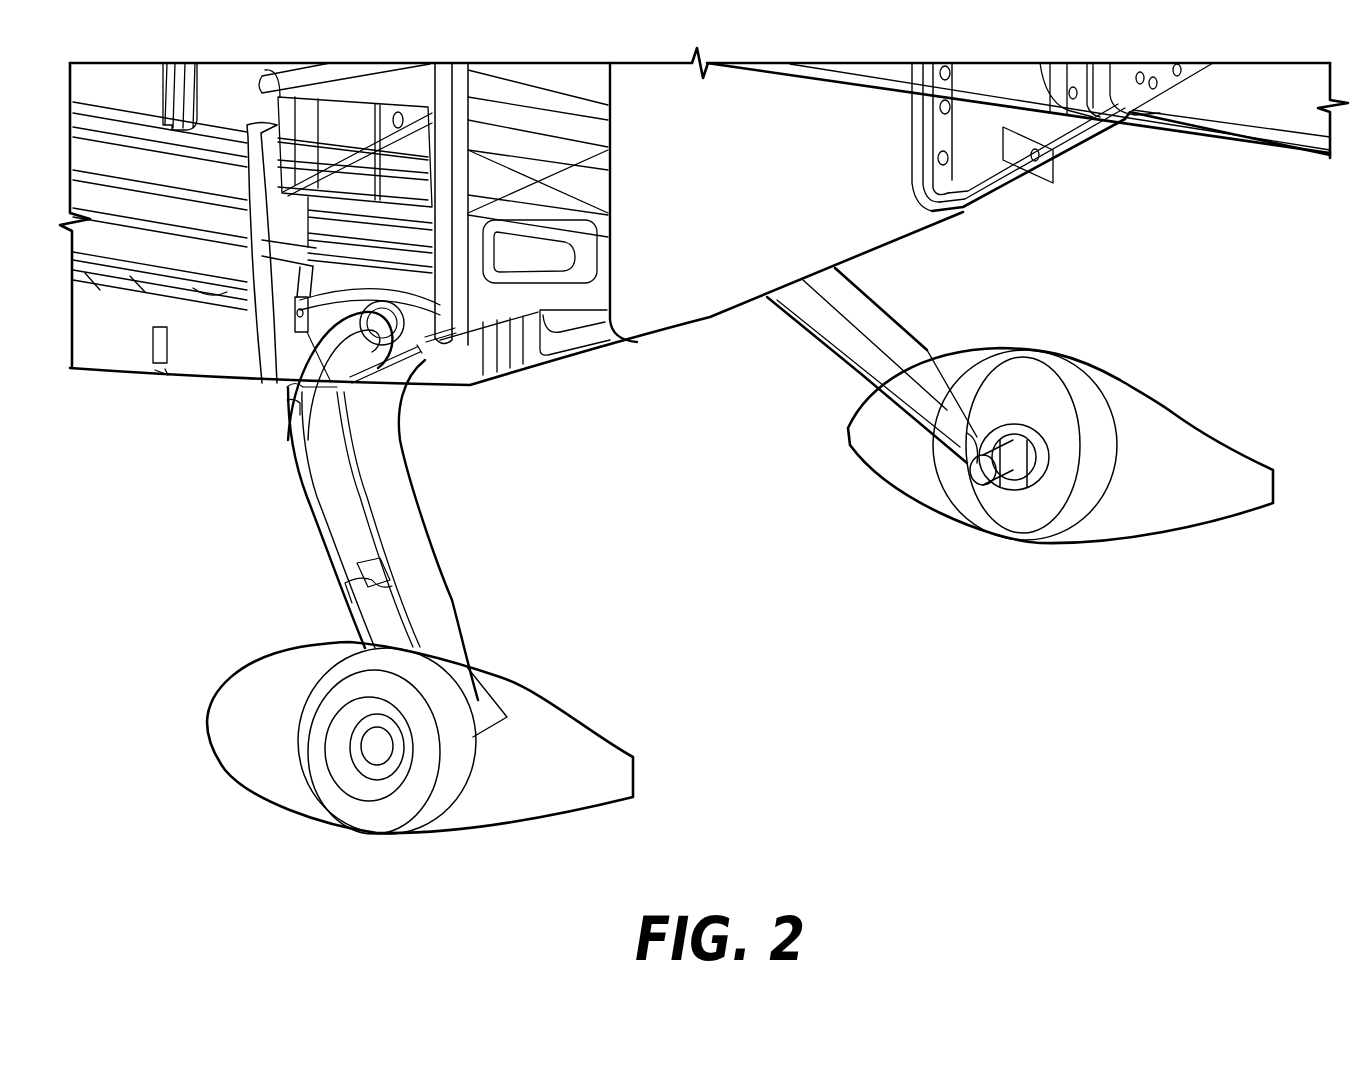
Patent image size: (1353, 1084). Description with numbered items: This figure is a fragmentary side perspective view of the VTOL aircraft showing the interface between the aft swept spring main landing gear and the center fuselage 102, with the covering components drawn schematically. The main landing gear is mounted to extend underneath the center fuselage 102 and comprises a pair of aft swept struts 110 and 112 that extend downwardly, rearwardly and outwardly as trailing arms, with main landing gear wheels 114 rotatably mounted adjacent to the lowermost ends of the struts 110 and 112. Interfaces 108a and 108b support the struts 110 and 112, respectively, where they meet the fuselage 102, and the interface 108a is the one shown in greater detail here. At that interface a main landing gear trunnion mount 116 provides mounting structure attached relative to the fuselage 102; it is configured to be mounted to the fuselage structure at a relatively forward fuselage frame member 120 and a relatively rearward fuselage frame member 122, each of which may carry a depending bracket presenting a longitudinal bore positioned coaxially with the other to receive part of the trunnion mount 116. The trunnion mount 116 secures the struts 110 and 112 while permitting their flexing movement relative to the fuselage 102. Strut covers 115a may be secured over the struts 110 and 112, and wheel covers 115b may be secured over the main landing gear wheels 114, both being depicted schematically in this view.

The center fuselage 102 is at (117, 392).
The interface 108a is at (268, 420).
The interface 108b is at (980, 217).
The main landing gear strut 110 is at (388, 517).
The main landing gear strut 112 is at (918, 327).
The main landing gear wheel 114 is at (377, 855).
The strut cover 115a is at (803, 330).
The wheel cover 115b is at (570, 725).
The main landing gear trunnion mount 116 is at (400, 345).
The forward fuselage frame member 120 is at (296, 315).
The aft fuselage frame member 122 is at (440, 331).